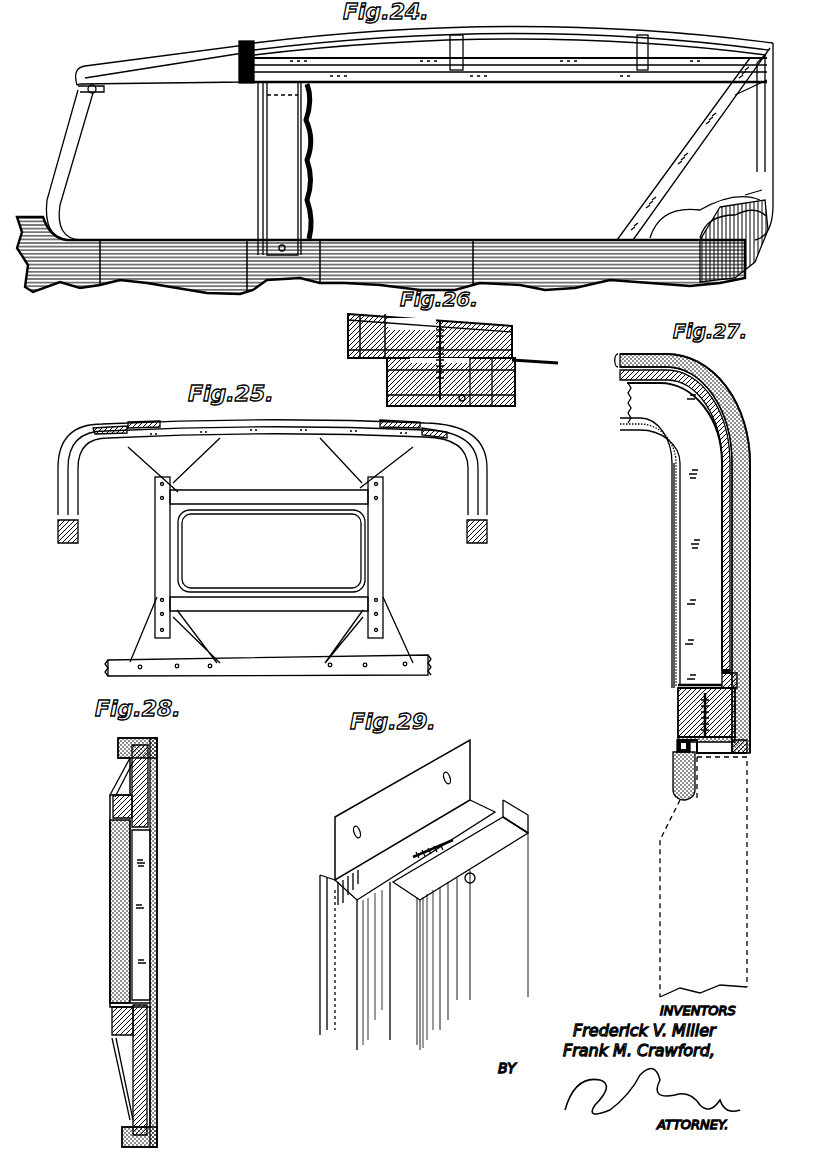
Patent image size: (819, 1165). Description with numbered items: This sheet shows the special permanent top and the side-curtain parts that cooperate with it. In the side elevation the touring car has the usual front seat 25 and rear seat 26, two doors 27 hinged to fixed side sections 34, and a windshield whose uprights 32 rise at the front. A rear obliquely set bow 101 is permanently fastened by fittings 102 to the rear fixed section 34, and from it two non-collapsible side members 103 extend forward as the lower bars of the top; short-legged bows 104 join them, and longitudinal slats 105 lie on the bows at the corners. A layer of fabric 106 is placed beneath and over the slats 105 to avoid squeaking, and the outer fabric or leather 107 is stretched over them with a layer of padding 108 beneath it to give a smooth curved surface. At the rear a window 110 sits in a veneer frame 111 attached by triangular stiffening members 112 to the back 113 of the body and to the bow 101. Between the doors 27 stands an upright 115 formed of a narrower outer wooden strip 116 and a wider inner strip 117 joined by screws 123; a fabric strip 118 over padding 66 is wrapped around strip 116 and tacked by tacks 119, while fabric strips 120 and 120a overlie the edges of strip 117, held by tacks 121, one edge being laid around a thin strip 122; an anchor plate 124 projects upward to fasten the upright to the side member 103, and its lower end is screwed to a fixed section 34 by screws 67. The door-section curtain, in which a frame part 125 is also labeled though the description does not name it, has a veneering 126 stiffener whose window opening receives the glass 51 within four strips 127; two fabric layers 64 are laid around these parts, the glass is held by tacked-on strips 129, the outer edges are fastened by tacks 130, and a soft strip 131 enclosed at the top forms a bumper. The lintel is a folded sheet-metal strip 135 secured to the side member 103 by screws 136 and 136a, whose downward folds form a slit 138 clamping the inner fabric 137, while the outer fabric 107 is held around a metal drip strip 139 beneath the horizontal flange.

In FIG. 24, the front seat 25 is at (632, 200).
In FIG. 24, the rear seat 26 is at (327, 183).
In FIG. 24, the door 27 is at (158, 246).
In FIG. 24, the upright of the windshield 32 is at (66, 162).
In FIG. 24, the fixed section of the car-body side 34 is at (92, 281).
In FIG. 28, the glass 51 is at (132, 905).
In FIG. 24, the fabric layer 64 is at (304, 127).
In FIG. 26, the fabric layer 64 is at (540, 360).
In FIG. 28, the fabric layer 64 is at (127, 782).
In FIG. 29, the fabric layer 64 is at (517, 800).
In FIG. 26, the padding 66 is at (466, 401).
In FIG. 29, the padding 66 is at (525, 815).
In FIG. 24, the screw 67 is at (278, 252).
In FIG. 24, the rear obliquely set bow 101 is at (687, 165).
In FIG. 24, the fitting 102 is at (660, 232).
In FIG. 24, the side member 103 is at (558, 84).
In FIG. 25, the side member 103 is at (77, 545).
In FIG. 27, the side member 103 is at (678, 723).
In FIG. 24, the short-legged bow 104 is at (495, 32).
In FIG. 25, the short-legged bow 104 is at (298, 428).
In FIG. 27, the short-legged bow 104 is at (697, 547).
In FIG. 24, the slat 105 is at (693, 56).
In FIG. 25, the slat 105 is at (95, 428).
In FIG. 27, the slat 105 is at (693, 402).
In FIG. 24, the layer of fabric 106 is at (262, 46).
In FIG. 25, the layer of fabric 106 is at (147, 426).
In FIG. 27, the layer of fabric 106 is at (723, 518).
In FIG. 24, the outer fabric or leather 107 is at (205, 50).
In FIG. 27, the outer fabric or leather 107 is at (623, 352).
In FIG. 27, the padding 108 is at (743, 438).
In FIG. 25, the window 110 is at (358, 553).
In FIG. 24, the frame 111 is at (763, 145).
In FIG. 25, the frame 111 is at (378, 584).
In FIG. 24, the stiffening member 112 is at (752, 98).
In FIG. 25, the stiffening member 112 is at (400, 467).
In FIG. 24, the back of the car body 113 is at (752, 242).
In FIG. 25, the back of the car body 113 is at (282, 665).
In FIG. 24, the upright 115 is at (298, 150).
In FIG. 24, the wooden strip 116 is at (275, 208).
In FIG. 26, the wooden strip 116 is at (514, 398).
In FIG. 29, the wooden strip 116 is at (460, 933).
In FIG. 24, the wooden strip 117 is at (258, 148).
In FIG. 26, the wooden strip 117 is at (510, 343).
In FIG. 29, the wooden strip 117 is at (407, 925).
In FIG. 26, the strip of fabric 118 is at (516, 389).
In FIG. 29, the strip of fabric 118 is at (530, 863).
In FIG. 26, the tack 119 is at (387, 373).
In FIG. 26, the strip of fabric 120 is at (512, 352).
In FIG. 26, the strip of fabric 120a is at (348, 341).
In FIG. 29, the strip of fabric 120a is at (487, 810).
In FIG. 26, the tack 121 is at (350, 330).
In FIG. 26, the thin strip 122 is at (358, 316).
In FIG. 29, the thin strip 122 is at (320, 880).
In FIG. 26, the screw 123 is at (443, 330).
In FIG. 29, the screw 123 is at (422, 852).
In FIG. 29, the anchor plate 124 is at (467, 765).
In FIG. 28, the window frame 125 is at (173, 942).
In FIG. 28, the wood veneering 126 is at (157, 1035).
In FIG. 28, the strip 127 is at (120, 796).
In FIG. 28, the tacked-on strip 129 is at (112, 827).
In FIG. 28, the tack 130 is at (127, 1135).
In FIG. 25, the soft strip 131 is at (62, 542).
In FIG. 27, the soft strip 131 is at (690, 803).
In FIG. 28, the soft strip 131 is at (118, 740).
In FIG. 27, the folded sheet-metal strip 135 is at (677, 748).
In FIG. 27, the screw 136 is at (745, 728).
In FIG. 27, the screw 136a is at (678, 704).
In FIG. 27, the inner strip of fabric 137 is at (673, 600).
In FIG. 27, the slit 138 is at (672, 773).
In FIG. 25, the metal drip strip 139 is at (480, 543).
In FIG. 27, the metal drip strip 139 is at (740, 692).